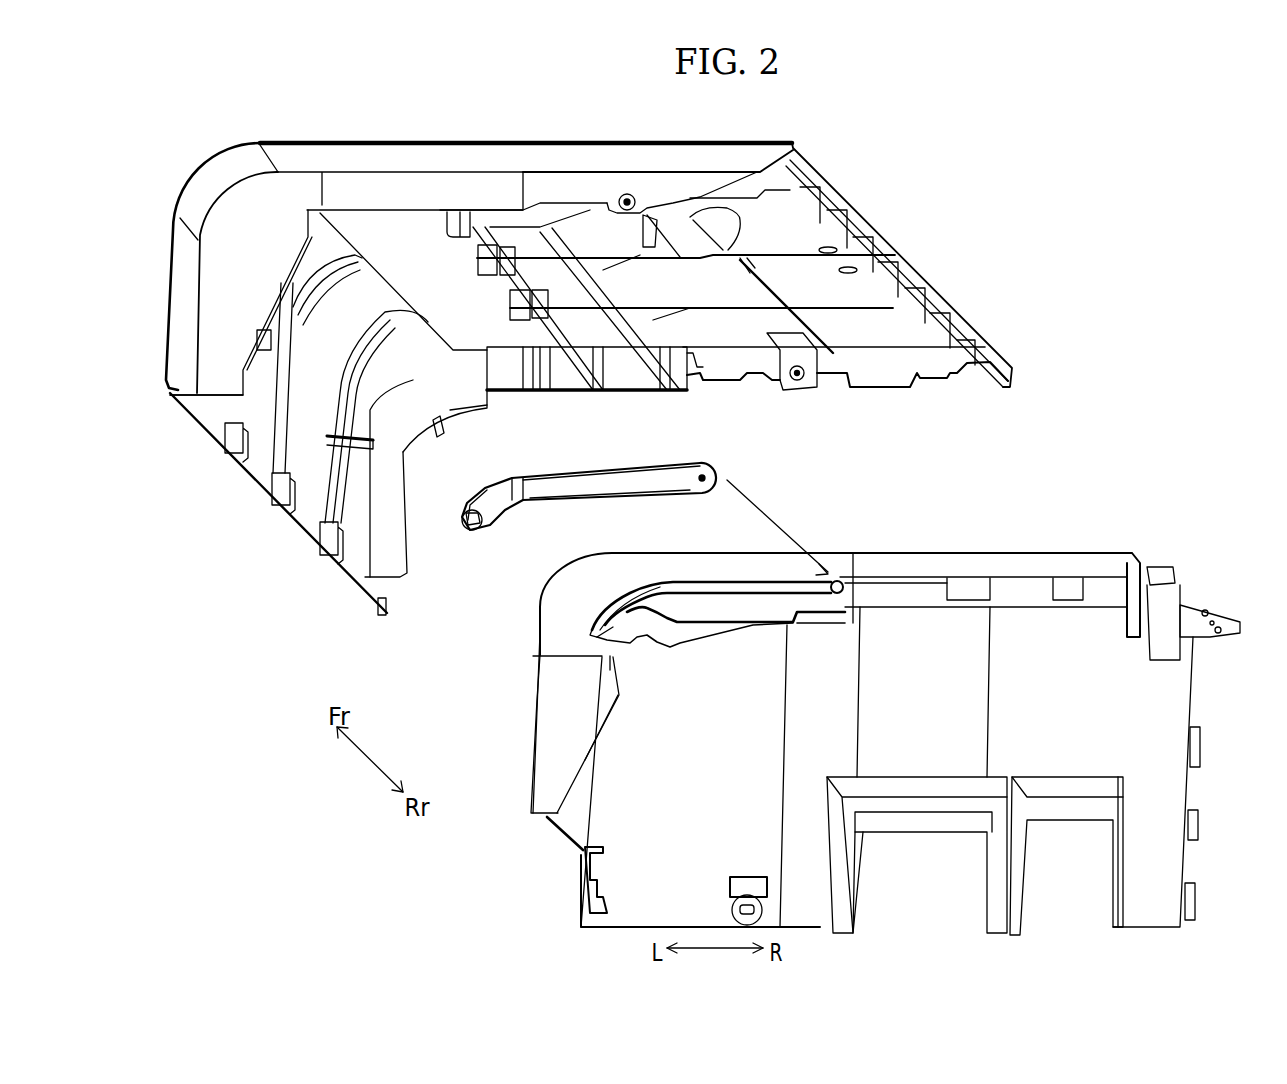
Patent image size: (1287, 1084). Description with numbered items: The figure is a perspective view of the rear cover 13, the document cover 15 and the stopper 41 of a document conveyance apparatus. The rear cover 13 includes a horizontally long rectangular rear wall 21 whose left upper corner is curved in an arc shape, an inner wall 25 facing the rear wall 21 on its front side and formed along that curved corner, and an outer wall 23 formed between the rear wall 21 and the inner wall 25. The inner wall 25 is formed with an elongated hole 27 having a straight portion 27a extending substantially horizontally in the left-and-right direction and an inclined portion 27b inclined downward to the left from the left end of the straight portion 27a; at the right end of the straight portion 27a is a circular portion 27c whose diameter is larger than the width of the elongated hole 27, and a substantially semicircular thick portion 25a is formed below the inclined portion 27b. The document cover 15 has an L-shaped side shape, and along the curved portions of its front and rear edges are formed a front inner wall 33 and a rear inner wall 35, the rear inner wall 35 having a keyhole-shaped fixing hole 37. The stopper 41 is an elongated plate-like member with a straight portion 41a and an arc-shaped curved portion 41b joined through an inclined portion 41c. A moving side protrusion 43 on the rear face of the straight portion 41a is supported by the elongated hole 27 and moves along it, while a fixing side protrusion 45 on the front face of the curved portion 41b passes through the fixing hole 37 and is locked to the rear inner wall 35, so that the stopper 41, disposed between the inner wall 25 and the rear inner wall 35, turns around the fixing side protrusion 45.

The rear cover 13 is at (987, 545).
The document cover 15 is at (444, 130).
The rear wall 21 is at (902, 745).
The outer wall 23 is at (908, 572).
The inner wall 25 is at (570, 640).
The thick portion 25a is at (617, 705).
The elongated hole 27 is at (712, 600).
The straight portion 27a is at (745, 588).
The inclined portion 27b is at (628, 620).
The circular portion 27c is at (835, 593).
The front inner wall 33 is at (203, 458).
The rear inner wall 35 is at (382, 527).
The fixing hole 37 is at (437, 443).
The stopper 41 is at (730, 463).
The straight portion 41a is at (617, 483).
The curved portion 41b is at (482, 507).
The inclined portion 41c is at (522, 472).
The moving side protrusion 43 is at (700, 482).
The fixing side protrusion 45 is at (470, 530).